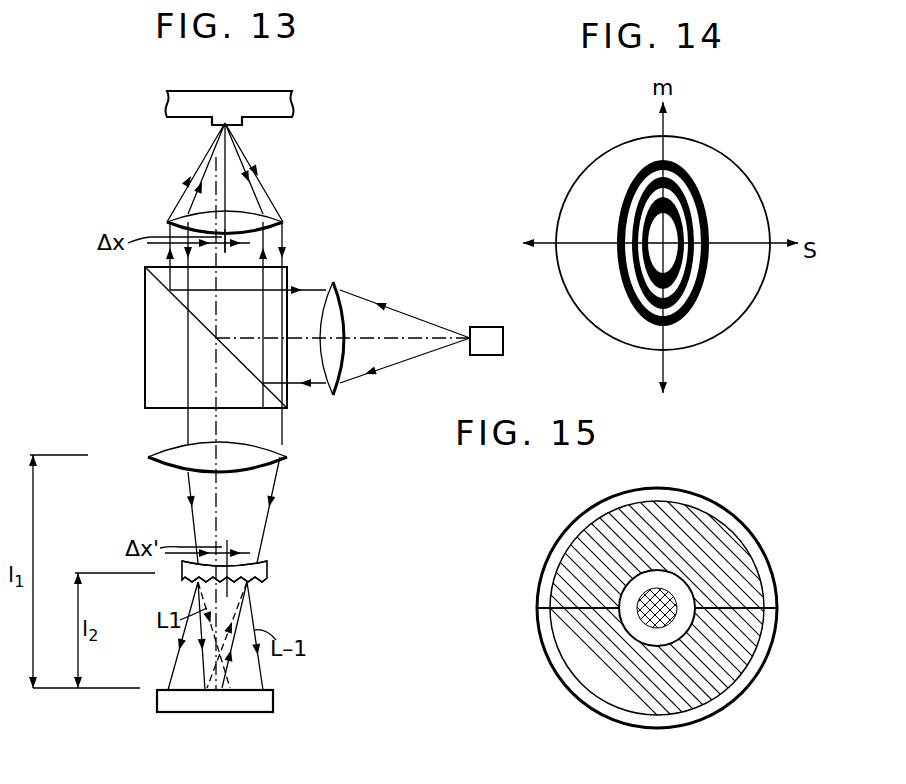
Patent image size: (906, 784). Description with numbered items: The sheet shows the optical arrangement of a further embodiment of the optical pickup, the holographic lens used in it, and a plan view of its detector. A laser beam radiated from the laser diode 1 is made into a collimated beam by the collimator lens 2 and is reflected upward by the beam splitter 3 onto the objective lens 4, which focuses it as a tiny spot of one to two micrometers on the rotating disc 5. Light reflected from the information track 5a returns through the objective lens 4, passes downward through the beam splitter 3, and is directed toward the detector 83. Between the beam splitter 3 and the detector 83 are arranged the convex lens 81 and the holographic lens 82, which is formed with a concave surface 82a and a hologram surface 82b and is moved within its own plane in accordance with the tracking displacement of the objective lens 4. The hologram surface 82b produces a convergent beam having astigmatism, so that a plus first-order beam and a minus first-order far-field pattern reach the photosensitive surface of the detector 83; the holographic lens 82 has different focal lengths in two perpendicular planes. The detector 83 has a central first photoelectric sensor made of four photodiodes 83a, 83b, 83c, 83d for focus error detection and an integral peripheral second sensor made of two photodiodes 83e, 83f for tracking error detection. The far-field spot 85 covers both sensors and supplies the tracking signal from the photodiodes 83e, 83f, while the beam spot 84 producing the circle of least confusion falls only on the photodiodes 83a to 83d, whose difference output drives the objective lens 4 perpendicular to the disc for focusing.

In FIG. 13, the laser diode 1 is at (487, 327).
In FIG. 13, the collimator lens 2 is at (335, 283).
In FIG. 13, the beam splitter 3 is at (287, 270).
In FIG. 13, the objective lens 4 is at (283, 222).
In FIG. 13, the rotating disc 5 is at (264, 92).
In FIG. 13, the information track 5a is at (226, 122).
In FIG. 13, the convex lens 81 is at (285, 457).
In FIG. 13, the holographic lens 82 is at (268, 566).
In FIG. 14, the holographic lens 82 is at (745, 176).
In FIG. 13, the concave surface 82a is at (260, 560).
In FIG. 13, the hologram surface 82b is at (264, 581).
In FIG. 13, the detector 83 is at (273, 698).
In FIG. 15, the detector 83 is at (746, 514).
In FIG. 15, the photodiode 83a is at (660, 586).
In FIG. 15, the photodiode 83b is at (627, 622).
In FIG. 15, the photodiode 83c is at (660, 627).
In FIG. 15, the photodiode 83d is at (695, 625).
In FIG. 15, the photodiode 83e is at (543, 573).
In FIG. 15, the photodiode 83f is at (542, 629).
In FIG. 15, the beam spot 84 is at (678, 602).
In FIG. 15, the far-field spot 85 is at (760, 643).